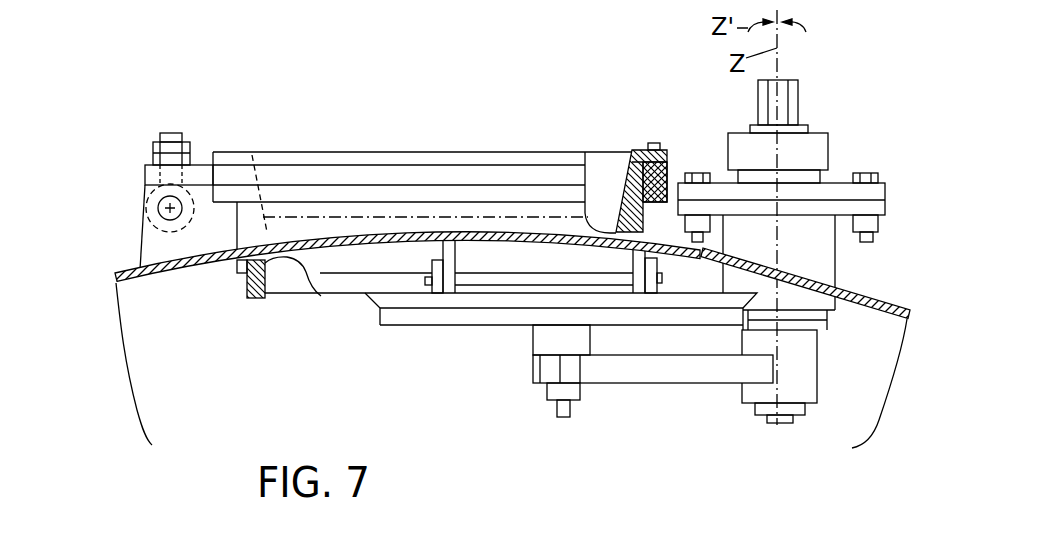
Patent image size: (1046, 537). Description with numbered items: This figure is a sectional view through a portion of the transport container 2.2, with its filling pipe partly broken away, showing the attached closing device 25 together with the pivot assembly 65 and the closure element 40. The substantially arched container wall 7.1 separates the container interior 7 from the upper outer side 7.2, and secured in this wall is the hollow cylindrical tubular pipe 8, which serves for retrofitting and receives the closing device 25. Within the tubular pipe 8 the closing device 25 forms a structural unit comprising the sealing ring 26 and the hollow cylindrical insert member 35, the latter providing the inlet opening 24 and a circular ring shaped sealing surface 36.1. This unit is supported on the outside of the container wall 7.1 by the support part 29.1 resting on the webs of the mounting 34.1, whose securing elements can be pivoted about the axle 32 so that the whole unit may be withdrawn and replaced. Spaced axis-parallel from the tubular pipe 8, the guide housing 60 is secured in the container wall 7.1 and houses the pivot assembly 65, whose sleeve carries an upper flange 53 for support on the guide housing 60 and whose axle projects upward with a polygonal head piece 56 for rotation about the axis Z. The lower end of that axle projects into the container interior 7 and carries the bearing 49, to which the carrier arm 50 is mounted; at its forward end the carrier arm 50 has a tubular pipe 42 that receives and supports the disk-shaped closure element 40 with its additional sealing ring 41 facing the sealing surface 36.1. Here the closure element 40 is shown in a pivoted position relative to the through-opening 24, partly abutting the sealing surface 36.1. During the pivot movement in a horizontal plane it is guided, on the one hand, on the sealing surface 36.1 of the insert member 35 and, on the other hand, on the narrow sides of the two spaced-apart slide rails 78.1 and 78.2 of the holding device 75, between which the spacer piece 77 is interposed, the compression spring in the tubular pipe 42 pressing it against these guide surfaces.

The transport container 2.2 is at (119, 373).
The container interior 7 is at (518, 316).
The container wall 7.1 is at (162, 283).
The upper outer side of the container wall 7.2 is at (890, 298).
The tubular pipe 8 is at (236, 268).
The inlet opening 24 is at (606, 166).
The closing device 25 is at (561, 371).
The sealing ring 26 is at (670, 150).
The support part 29.1 is at (145, 173).
The axle 32 is at (158, 208).
The mounting 34.1 is at (130, 245).
The insert member 35 is at (252, 299).
The sealing surface 36.1 is at (332, 294).
The closure element 40 is at (403, 318).
The sealing ring 41 is at (372, 302).
The tubular pipe 42 is at (582, 336).
The bearing 49 is at (803, 350).
The carrier arm 50 is at (645, 370).
The flange 53 is at (466, 148).
The head piece 56 is at (790, 99).
The guide housing 60 is at (817, 250).
The pivot assembly 65 is at (732, 425).
The holding device 75 is at (505, 297).
The spacer piece 77 is at (525, 283).
The slide rail 78.1 is at (440, 296).
The slide rail 78.2 is at (655, 292).